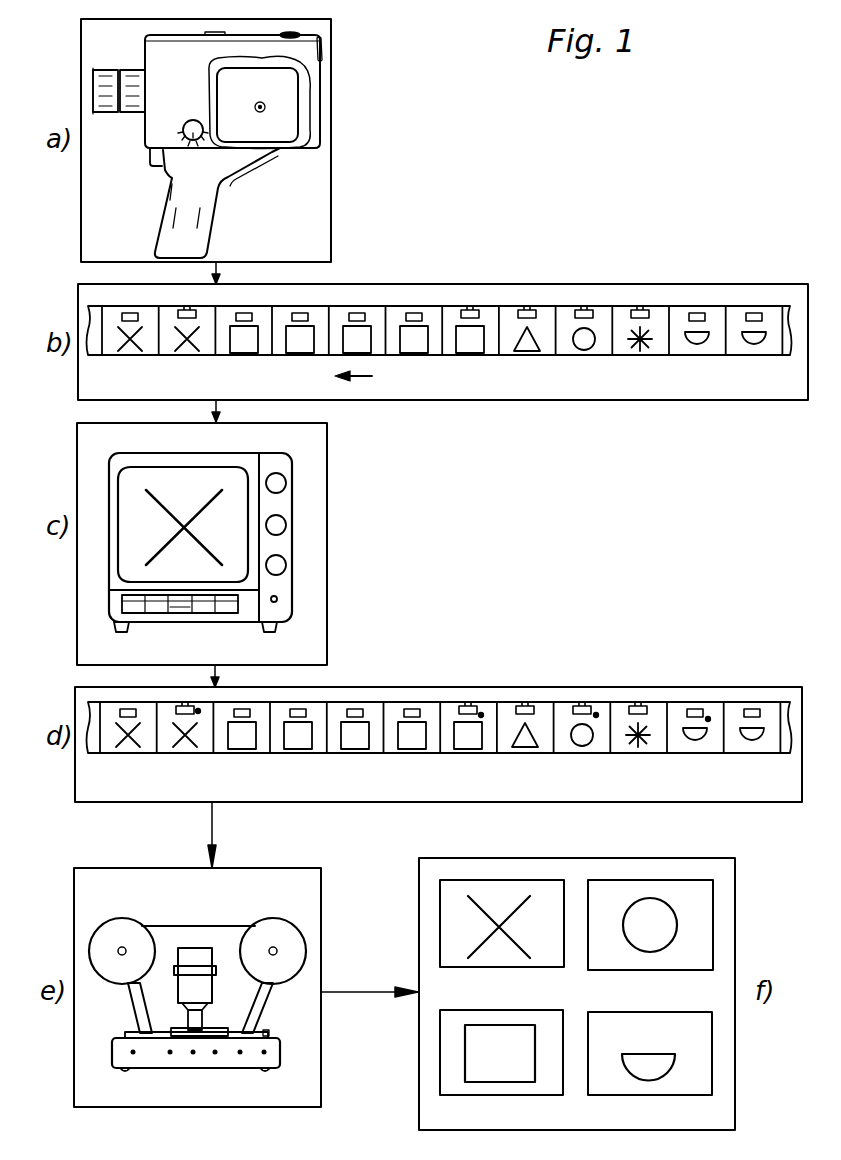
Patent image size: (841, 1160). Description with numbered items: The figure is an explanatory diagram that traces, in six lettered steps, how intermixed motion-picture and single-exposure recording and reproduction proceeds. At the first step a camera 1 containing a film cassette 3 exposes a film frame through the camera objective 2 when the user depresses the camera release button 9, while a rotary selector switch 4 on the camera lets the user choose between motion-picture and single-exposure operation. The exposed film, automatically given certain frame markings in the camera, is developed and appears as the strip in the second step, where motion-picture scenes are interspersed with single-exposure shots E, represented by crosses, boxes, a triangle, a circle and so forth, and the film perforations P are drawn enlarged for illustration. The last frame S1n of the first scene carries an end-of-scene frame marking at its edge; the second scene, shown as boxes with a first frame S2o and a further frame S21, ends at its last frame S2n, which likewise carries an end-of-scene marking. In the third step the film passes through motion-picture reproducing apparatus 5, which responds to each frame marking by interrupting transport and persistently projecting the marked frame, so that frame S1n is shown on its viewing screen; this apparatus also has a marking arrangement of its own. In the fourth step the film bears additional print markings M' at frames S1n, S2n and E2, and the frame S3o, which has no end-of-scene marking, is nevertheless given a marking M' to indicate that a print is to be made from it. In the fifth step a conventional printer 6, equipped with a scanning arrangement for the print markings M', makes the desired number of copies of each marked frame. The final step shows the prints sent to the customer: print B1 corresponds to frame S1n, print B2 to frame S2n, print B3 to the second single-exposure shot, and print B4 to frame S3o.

The camera 1 is at (313, 47).
The camera objective 2 is at (108, 80).
The film cassette 3 is at (289, 91).
The rotary selector switch 4 is at (183, 129).
The camera release button 9 is at (152, 160).
The motion-picture reproducing apparatus 5 is at (282, 547).
The printer 6 is at (220, 928).
The last frame of the first scene S1n is at (185, 342).
The first frame of the second scene S2o is at (241, 343).
The second frame of the second scene S21 is at (298, 343).
The last frame of the second scene S2n is at (468, 343).
The single-exposure shot E is at (523, 346).
The second single-exposure shot E2 is at (582, 743).
The first frame of the third scene S3o is at (696, 345).
The film running direction L is at (375, 376).
The print marking M' is at (462, 688).
The film perforations P is at (699, 312).
The print B1 is at (458, 914).
The print B2 is at (455, 1054).
The print B3 is at (698, 910).
The print B4 is at (688, 1058).